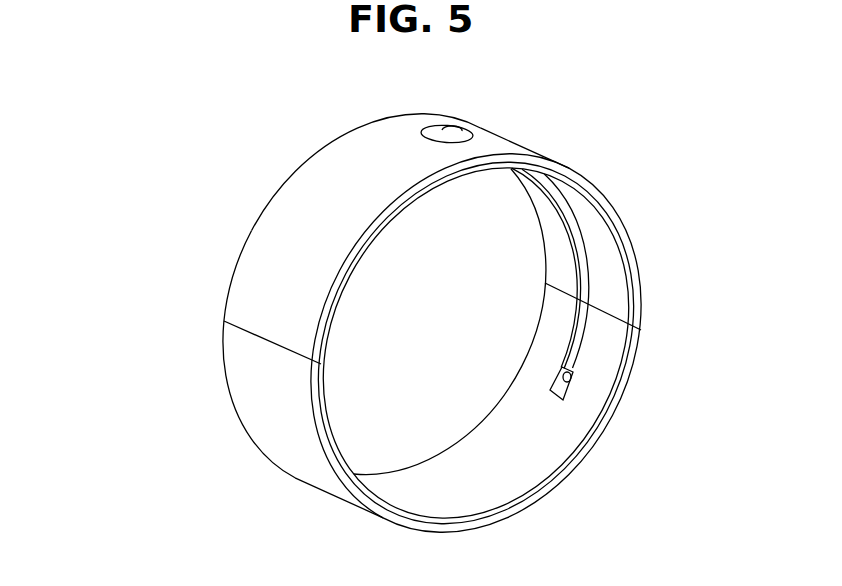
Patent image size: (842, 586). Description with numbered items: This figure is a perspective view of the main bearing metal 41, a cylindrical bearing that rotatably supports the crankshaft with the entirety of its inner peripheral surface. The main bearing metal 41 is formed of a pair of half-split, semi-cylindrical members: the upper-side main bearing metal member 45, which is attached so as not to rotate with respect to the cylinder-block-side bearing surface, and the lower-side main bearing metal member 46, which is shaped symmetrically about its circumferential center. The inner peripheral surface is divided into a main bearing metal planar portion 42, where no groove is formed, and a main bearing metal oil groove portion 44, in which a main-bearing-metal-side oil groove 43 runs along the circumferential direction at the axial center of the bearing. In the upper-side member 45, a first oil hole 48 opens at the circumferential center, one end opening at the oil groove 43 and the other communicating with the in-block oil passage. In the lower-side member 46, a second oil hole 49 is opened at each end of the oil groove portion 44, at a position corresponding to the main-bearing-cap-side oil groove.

The main bearing metal 41 is at (117, 235).
The main bearing metal planar portion 42 is at (497, 476).
The main-bearing-metal-side oil groove 43 is at (583, 280).
The main bearing metal oil groove portion 44 is at (603, 358).
The upper-side main bearing metal member 45 is at (270, 280).
The lower-side main bearing metal member 46 is at (268, 367).
The first oil hole 48 is at (463, 131).
The second oil hole 49 is at (570, 392).